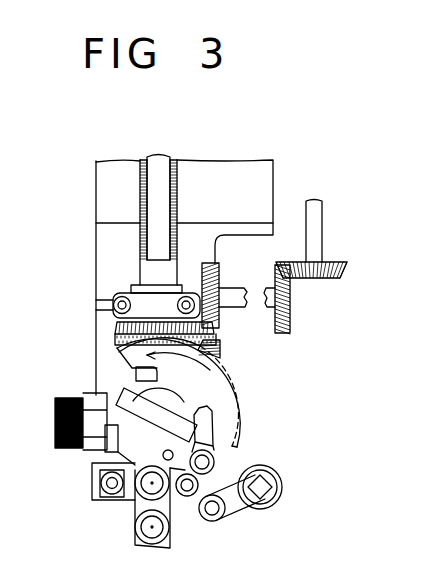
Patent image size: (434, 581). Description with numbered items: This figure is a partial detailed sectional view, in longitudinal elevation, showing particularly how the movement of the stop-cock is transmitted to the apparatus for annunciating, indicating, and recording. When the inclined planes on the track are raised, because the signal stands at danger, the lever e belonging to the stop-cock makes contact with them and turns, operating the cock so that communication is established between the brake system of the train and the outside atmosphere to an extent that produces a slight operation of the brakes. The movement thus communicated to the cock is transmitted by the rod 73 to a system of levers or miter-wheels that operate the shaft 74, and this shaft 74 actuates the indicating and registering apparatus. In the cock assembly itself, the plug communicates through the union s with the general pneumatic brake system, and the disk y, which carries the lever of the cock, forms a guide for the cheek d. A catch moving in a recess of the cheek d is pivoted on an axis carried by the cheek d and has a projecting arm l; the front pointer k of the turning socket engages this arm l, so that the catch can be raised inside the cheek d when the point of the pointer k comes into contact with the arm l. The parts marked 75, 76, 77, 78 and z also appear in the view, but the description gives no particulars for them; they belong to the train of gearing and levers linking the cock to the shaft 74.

The rod 73 is at (255, 283).
The shaft 74 is at (322, 231).
The pinion 75 is at (216, 348).
The crown gear 76 is at (232, 318).
The toothed sector 77 is at (225, 413).
The shaft with bearing housing 78 is at (163, 278).
The direction of rotation arrow z is at (178, 373).
The disk y is at (175, 399).
The cheek d is at (120, 390).
The union s is at (55, 430).
The projecting arm l is at (100, 465).
The front pointer k is at (99, 487).
The lever e is at (162, 548).